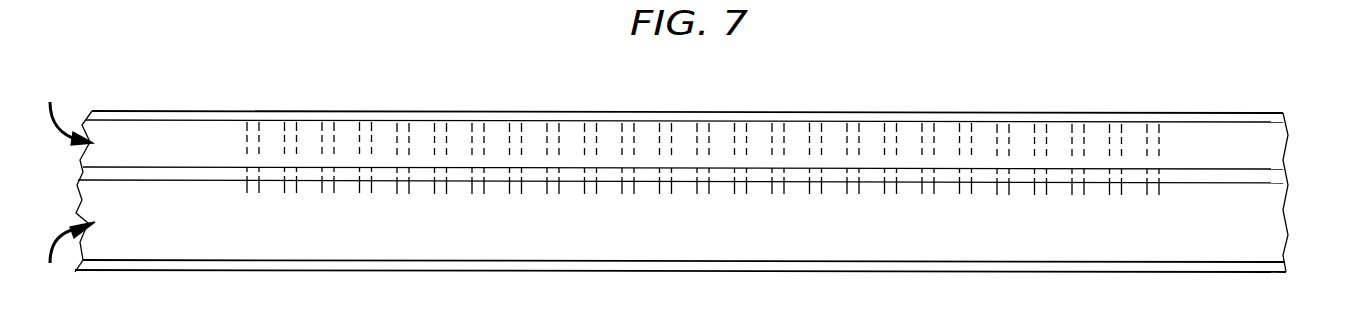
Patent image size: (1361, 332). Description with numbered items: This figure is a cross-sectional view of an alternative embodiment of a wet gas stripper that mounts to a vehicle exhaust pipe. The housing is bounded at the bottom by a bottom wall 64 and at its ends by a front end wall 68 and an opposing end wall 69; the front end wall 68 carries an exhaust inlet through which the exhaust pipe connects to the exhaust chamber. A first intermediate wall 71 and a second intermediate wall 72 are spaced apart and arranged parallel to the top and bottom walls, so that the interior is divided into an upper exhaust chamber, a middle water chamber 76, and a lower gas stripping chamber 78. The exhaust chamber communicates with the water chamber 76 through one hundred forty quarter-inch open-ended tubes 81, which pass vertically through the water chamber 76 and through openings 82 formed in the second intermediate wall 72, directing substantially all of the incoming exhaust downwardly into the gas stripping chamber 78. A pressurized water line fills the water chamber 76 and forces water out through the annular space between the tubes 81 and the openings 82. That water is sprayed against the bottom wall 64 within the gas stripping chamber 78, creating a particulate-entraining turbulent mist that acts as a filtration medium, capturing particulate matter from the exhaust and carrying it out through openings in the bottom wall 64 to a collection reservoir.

The bottom wall 64 is at (153, 258).
The front end wall 68 is at (78, 186).
The end wall 69 is at (1288, 240).
The first intermediate wall 71 is at (1095, 112).
The second intermediate wall 72 is at (1235, 167).
The water chamber 76 is at (661, 110).
The gas stripping chamber 78 is at (67, 204).
The open-ended tubes 81 is at (333, 140).
The openings 82 is at (377, 177).